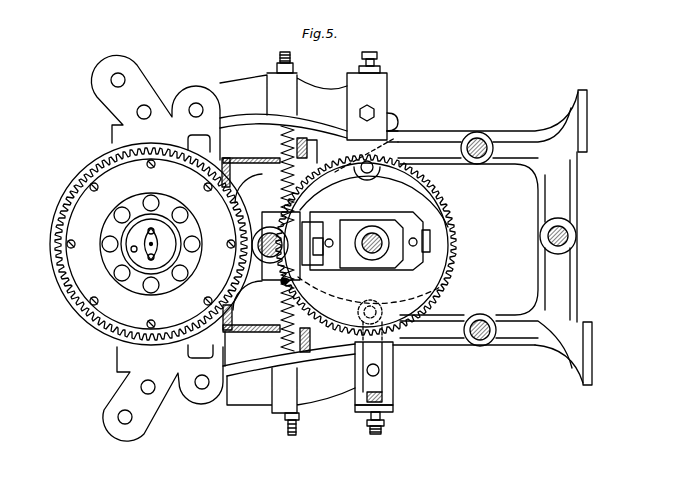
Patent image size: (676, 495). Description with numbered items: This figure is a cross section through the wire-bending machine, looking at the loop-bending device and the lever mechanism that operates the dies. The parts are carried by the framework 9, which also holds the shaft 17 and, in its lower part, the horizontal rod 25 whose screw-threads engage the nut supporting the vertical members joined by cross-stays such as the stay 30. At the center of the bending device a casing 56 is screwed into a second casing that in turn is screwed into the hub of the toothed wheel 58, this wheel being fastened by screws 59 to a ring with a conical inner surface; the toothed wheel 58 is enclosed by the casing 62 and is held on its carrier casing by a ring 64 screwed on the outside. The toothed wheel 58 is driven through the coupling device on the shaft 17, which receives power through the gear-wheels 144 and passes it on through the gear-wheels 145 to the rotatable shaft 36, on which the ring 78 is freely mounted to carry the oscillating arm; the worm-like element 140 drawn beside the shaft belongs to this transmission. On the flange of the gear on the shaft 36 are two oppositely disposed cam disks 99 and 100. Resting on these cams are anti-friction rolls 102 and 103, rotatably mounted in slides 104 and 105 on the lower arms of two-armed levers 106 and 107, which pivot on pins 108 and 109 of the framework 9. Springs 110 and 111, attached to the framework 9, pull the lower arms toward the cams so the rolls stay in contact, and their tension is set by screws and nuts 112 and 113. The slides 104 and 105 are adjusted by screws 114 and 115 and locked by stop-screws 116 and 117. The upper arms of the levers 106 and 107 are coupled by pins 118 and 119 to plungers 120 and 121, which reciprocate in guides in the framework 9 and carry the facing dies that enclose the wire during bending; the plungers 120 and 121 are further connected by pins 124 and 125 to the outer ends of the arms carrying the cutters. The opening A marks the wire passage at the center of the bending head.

The framework 9 is at (535, 332).
The shaft 17 is at (255, 248).
The horizontal rod 25 is at (549, 240).
The cross-stay 30 is at (327, 223).
The rotatable shaft 36 is at (372, 256).
The casing 56 is at (143, 225).
The toothed wheel 58 is at (118, 175).
The screws 59 is at (87, 182).
The casing 62 is at (72, 300).
The ring 64 is at (116, 233).
The ring 78 is at (374, 234).
The cam disk 99 is at (442, 185).
The cam disk 100 is at (438, 290).
The anti-friction roll 102 is at (398, 162).
The anti-friction roll 103 is at (403, 317).
The slide 104 is at (374, 160).
The slide 105 is at (376, 360).
The two-armed lever 106 is at (238, 100).
The two-armed lever 107 is at (241, 392).
The pin 108 is at (198, 103).
The pin 109 is at (203, 389).
The spring 110 is at (278, 137).
The spring 111 is at (285, 348).
The screw and nut 112 is at (292, 60).
The screw and nut 113 is at (289, 428).
The screw 114 is at (378, 55).
The screw 115 is at (388, 426).
The stop-screw 116 is at (378, 112).
The stop-screw 117 is at (370, 375).
The pin 118 is at (146, 104).
The pin 119 is at (141, 386).
The plunger 120 is at (124, 73).
The plunger 121 is at (120, 408).
The pin 124 is at (115, 78).
The pin 125 is at (122, 420).
The worm 140 is at (287, 175).
The gear-wheels 144 is at (256, 220).
The gear-wheels 145 is at (455, 262).
The opening A is at (136, 263).